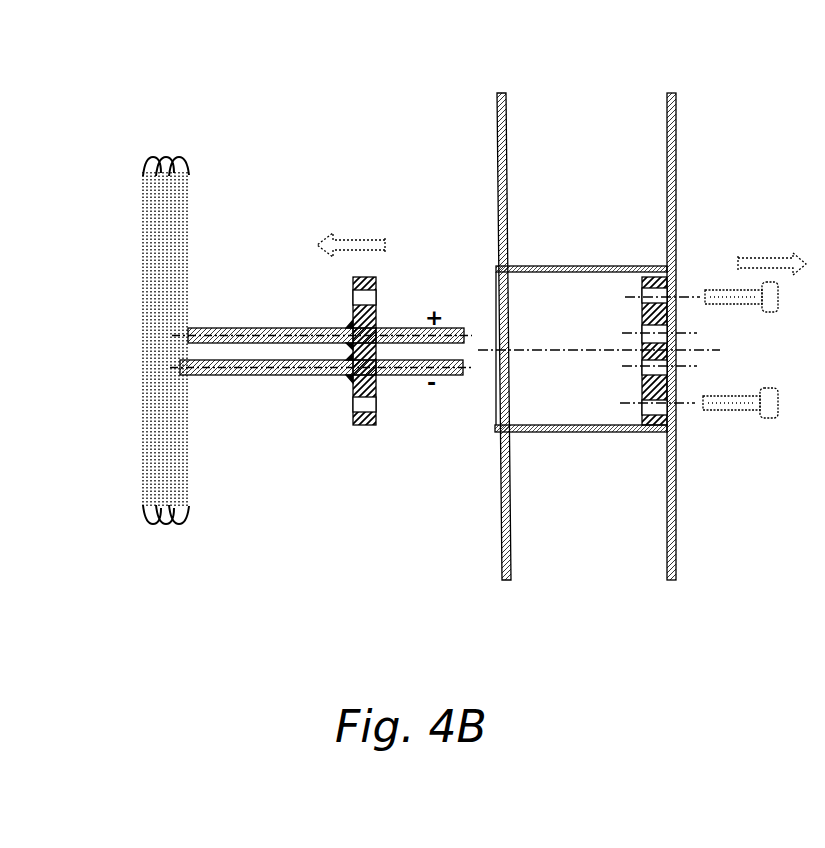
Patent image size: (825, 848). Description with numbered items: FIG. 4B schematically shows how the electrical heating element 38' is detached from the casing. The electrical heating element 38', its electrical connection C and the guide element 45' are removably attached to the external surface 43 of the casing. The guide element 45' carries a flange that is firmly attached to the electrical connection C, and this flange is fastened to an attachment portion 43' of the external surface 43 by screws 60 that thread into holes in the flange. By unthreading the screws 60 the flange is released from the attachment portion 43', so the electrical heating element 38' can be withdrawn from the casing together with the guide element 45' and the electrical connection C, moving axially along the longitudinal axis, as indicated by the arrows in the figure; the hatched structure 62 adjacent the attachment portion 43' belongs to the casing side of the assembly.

The electrical heating element 38' is at (163, 398).
The guide element 45' is at (367, 295).
The external surface 43 is at (606, 319).
The attachment portion 43' is at (650, 297).
The screws 60 is at (715, 295).
The housing box 62 is at (577, 432).
The electrical connection C is at (283, 393).